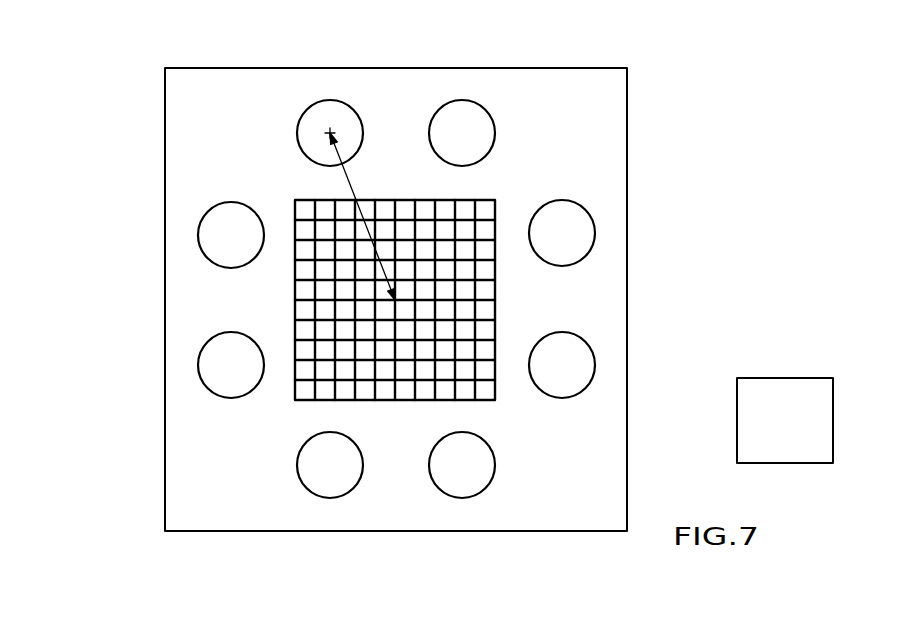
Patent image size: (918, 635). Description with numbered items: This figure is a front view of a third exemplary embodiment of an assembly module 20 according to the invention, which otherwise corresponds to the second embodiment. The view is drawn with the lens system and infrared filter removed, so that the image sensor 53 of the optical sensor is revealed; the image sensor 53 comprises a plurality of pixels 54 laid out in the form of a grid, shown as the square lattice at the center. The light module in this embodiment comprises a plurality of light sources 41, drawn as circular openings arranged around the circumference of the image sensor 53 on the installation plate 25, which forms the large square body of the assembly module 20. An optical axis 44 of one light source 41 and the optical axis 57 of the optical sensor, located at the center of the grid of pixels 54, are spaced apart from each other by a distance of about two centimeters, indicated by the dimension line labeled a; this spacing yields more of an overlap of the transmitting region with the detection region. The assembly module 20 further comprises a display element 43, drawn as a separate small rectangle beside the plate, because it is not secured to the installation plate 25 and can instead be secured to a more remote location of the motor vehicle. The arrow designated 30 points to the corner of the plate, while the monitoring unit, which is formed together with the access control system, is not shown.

The assembly module 20 is at (155, 93).
The installation plate 25 is at (178, 158).
The reference structure 30 is at (638, 88).
The light source 41 is at (673, 342).
The display element 43 is at (783, 395).
The optical axis of the light source 44 is at (301, 69).
The image sensor 53 is at (391, 308).
The pixels 54 is at (487, 310).
The optical axis of the optical sensor 57 is at (237, 402).